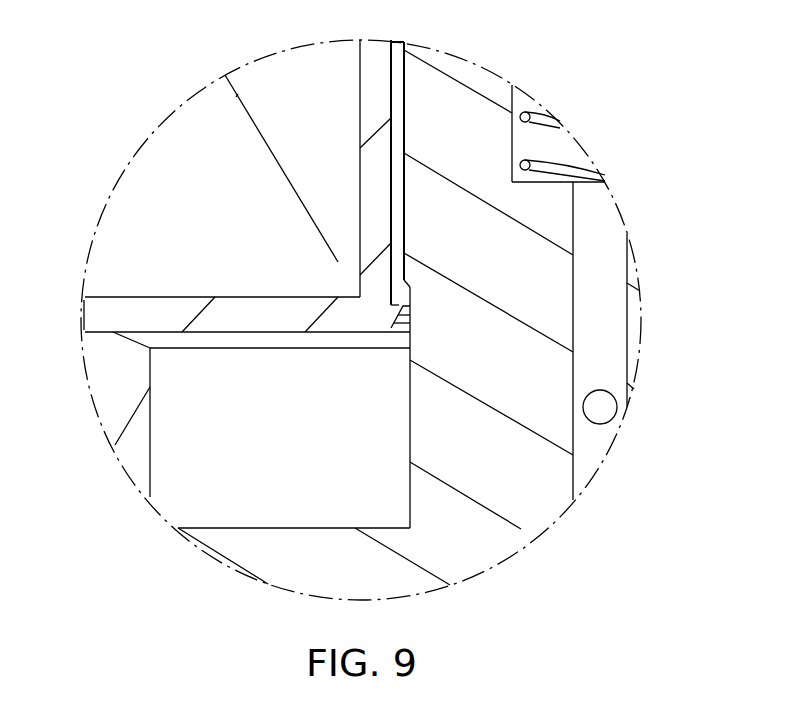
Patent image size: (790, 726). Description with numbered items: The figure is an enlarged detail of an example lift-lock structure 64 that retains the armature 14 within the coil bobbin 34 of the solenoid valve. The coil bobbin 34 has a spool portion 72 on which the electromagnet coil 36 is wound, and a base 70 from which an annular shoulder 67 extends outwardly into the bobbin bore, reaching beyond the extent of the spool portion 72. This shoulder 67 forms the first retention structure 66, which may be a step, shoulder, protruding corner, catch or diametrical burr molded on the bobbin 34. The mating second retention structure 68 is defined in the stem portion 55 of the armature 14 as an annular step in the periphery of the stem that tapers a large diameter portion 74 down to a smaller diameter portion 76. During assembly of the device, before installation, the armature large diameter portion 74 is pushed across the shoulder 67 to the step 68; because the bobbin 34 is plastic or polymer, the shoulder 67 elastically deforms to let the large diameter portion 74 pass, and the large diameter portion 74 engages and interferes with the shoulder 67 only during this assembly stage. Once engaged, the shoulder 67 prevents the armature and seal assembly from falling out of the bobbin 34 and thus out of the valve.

The armature 14 is at (633, 326).
The coil bobbin 34 is at (101, 313).
The electromagnet coil 36 is at (174, 148).
The stem portion 55 is at (469, 144).
The lift-lock structure 64 is at (425, 291).
The first retention structure 66 is at (408, 318).
The annular shoulder 67 is at (390, 318).
The second retention structure 68 is at (411, 281).
The base 70 is at (250, 312).
The spool portion 72 is at (369, 162).
The large diameter portion 74 is at (402, 92).
The smaller diameter portion 76 is at (404, 296).